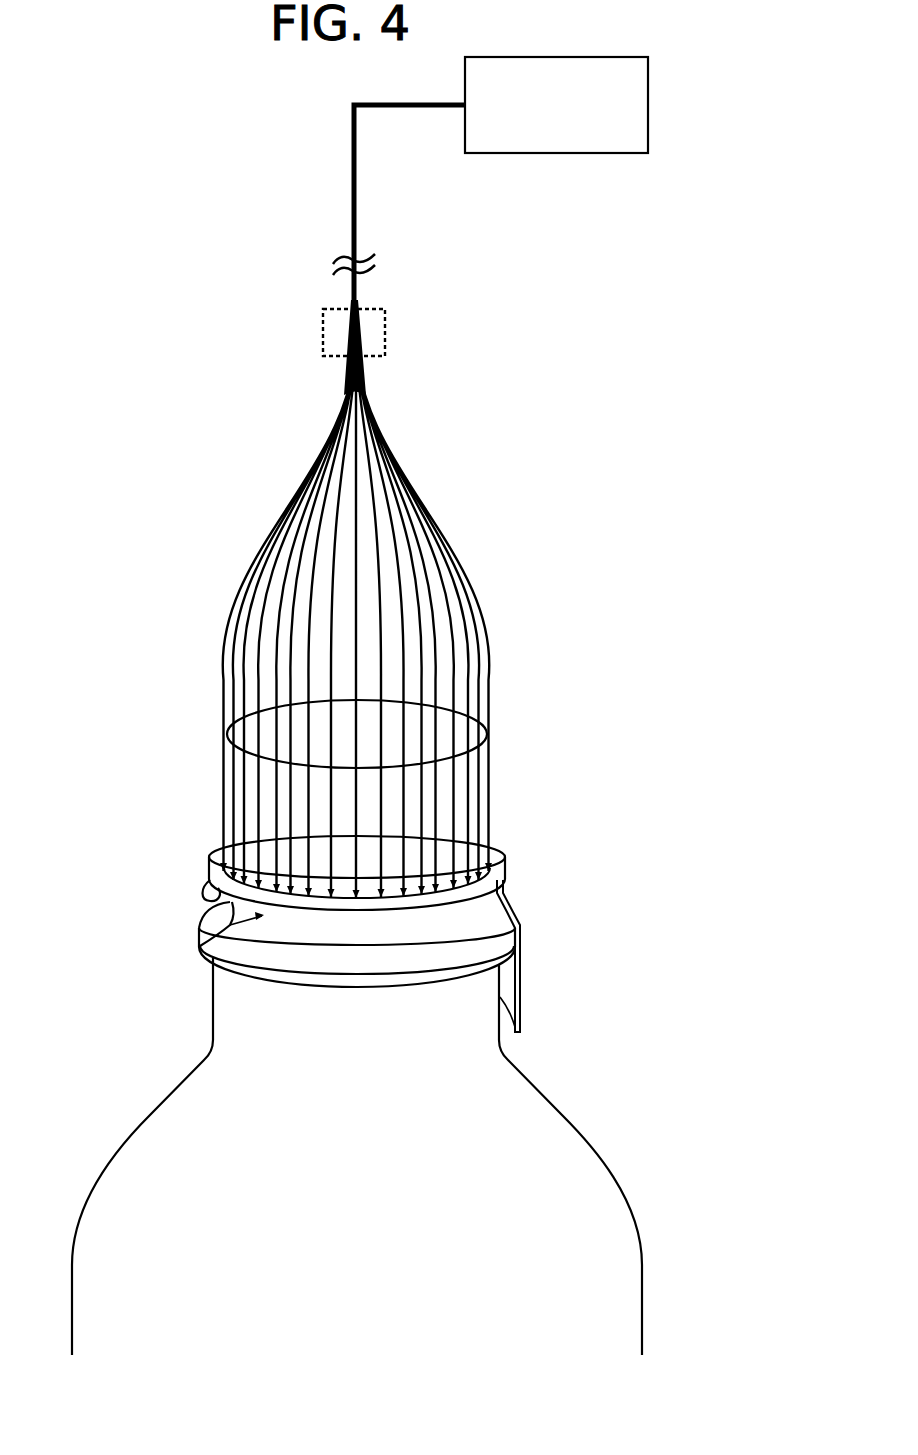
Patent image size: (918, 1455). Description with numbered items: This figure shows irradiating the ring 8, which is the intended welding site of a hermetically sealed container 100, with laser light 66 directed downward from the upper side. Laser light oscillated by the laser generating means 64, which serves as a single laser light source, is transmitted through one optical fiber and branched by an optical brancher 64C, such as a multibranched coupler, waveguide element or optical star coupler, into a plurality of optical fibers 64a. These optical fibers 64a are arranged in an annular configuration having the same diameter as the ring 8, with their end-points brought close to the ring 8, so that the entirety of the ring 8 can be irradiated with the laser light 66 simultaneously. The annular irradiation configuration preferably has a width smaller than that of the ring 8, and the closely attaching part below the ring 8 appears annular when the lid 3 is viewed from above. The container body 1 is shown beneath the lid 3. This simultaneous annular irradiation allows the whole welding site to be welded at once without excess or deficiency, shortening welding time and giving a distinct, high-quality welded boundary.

The laser generating means 64 is at (648, 100).
The optical brancher 64C is at (385, 330).
The optical fibers 64a is at (470, 578).
The ring 8 is at (497, 851).
The laser light 66 is at (483, 910).
The lid 3 is at (199, 944).
The hermetically sealed container 100 is at (660, 1161).
The bottle body 1 is at (645, 1283).